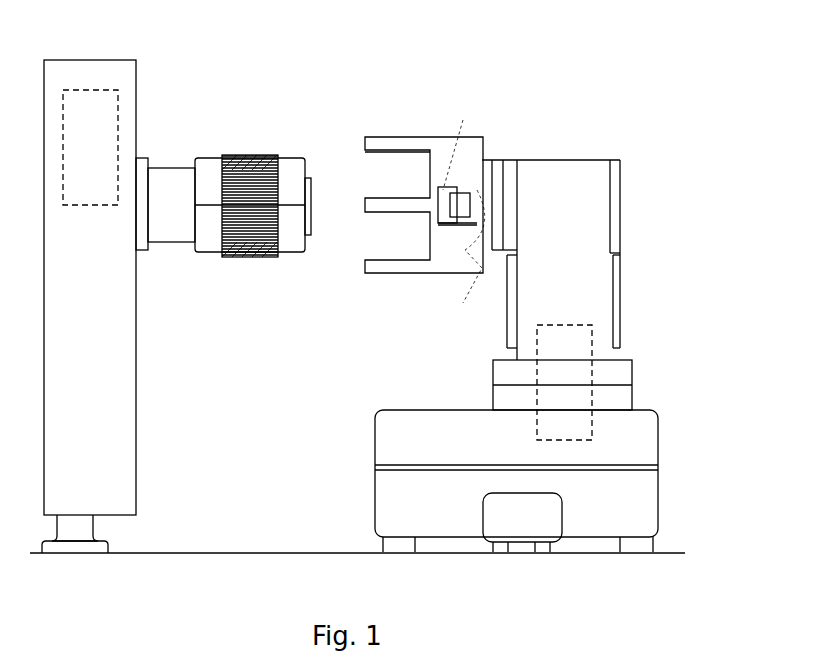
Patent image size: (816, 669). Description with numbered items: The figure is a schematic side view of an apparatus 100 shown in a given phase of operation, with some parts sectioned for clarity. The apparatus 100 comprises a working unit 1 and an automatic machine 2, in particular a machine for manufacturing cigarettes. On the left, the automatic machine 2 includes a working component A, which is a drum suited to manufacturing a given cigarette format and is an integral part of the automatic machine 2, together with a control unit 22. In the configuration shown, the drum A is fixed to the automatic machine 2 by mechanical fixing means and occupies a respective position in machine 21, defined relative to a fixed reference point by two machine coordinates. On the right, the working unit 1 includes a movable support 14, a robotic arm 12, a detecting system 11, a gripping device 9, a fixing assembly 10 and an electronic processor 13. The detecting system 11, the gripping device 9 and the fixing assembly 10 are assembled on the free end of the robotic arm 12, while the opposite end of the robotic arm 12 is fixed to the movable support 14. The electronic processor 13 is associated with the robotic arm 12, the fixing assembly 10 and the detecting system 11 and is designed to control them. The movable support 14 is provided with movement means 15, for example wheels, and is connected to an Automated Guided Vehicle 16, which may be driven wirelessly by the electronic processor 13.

The apparatus 100 is at (622, 77).
The working unit 1 is at (371, 340).
The automatic machine 2 is at (186, 320).
The position in machine 21 is at (180, 197).
The control unit 22 is at (97, 117).
The working component A is at (238, 173).
The gripping device 9 is at (380, 142).
The fixing assembly 10 is at (443, 190).
The detecting system 11 is at (463, 207).
The robotic arm 12 is at (587, 217).
The electronic processor 13 is at (587, 342).
The movable support 14 is at (632, 443).
The movement means 15 is at (643, 540).
The Automated Guided Vehicle 16 is at (552, 517).